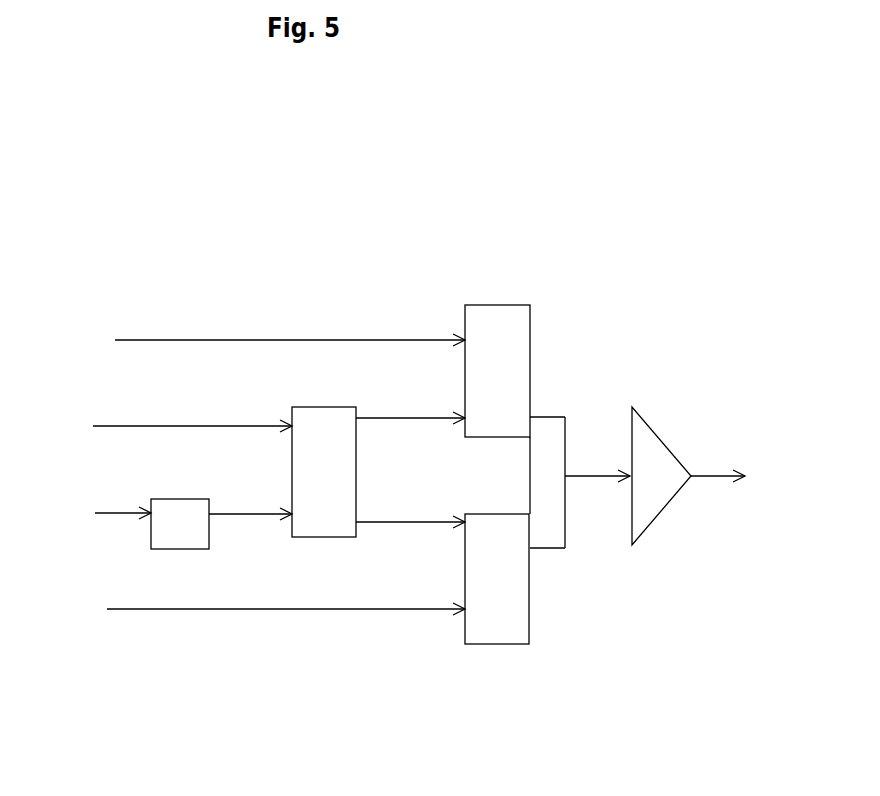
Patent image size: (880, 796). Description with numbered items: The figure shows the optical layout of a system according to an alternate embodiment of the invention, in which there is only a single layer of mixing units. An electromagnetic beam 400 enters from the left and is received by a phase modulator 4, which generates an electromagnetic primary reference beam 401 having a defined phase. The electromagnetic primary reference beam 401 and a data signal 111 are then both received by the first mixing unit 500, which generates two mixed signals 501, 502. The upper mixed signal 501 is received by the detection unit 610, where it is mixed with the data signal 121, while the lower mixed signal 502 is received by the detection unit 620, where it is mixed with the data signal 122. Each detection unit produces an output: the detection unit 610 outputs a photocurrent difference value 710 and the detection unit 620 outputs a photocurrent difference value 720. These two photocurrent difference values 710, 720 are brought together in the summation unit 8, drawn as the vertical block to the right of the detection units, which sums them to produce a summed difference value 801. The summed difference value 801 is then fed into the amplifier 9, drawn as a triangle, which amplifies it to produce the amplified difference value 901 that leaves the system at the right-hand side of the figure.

The data signal 121 is at (252, 339).
The data signal 111 is at (162, 427).
The electromagnetic beam 400 is at (92, 518).
The phase modulator 4 is at (180, 524).
The electromagnetic primary reference beam 401 is at (230, 514).
The data signal 122 is at (254, 611).
The first mixing unit 500 is at (324, 472).
The mixed signal 501 is at (407, 418).
The mixed signal 502 is at (405, 522).
The detection unit 610 is at (497, 371).
The detection unit 620 is at (497, 579).
The photocurrent difference value 710 is at (538, 415).
The photocurrent difference value 720 is at (538, 549).
The summation unit 8 is at (565, 477).
The summed difference value 801 is at (590, 472).
The amplifier 9 is at (661, 476).
The amplified difference value 901 is at (700, 468).